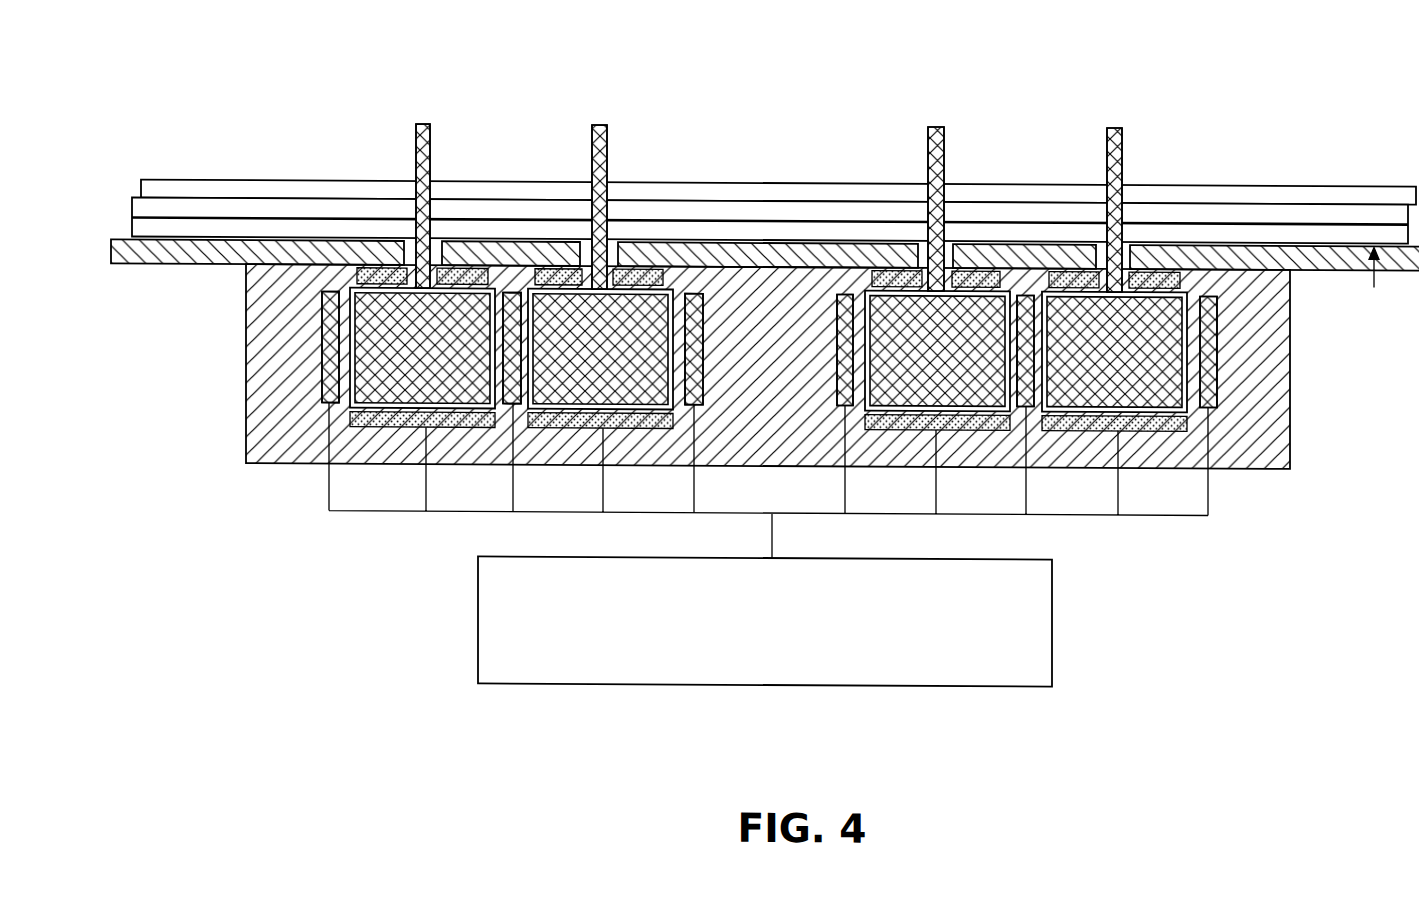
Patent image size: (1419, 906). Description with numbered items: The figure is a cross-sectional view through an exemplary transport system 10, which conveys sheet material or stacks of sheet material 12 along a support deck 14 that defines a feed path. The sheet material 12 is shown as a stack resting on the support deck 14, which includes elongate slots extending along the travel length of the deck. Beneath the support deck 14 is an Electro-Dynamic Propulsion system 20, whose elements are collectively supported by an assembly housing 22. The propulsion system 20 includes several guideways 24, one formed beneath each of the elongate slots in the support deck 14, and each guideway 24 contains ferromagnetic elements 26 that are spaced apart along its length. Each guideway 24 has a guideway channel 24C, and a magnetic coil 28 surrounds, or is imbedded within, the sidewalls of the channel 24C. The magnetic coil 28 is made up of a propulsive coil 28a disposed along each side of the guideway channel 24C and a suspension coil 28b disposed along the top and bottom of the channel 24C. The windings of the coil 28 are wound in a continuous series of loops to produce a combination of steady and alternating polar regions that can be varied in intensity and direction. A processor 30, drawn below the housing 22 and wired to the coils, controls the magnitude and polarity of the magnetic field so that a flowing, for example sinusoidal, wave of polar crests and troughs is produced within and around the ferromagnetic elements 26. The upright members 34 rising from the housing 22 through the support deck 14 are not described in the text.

The transport system 10 is at (765, 174).
The sheet material 12 is at (327, 213).
The support deck 14 is at (850, 242).
The Electro-Dynamic Propulsion (EDP) system 20 is at (690, 267).
The assembly housing 22 is at (768, 360).
The guideway 24 is at (690, 290).
The guideway channel 24C is at (705, 345).
The ferromagnetic element 26 is at (600, 330).
The magnetic coil 28 is at (639, 271).
The propulsive coil 28a is at (703, 347).
The suspension coil 28b is at (602, 417).
The processor 30 is at (520, 600).
The connector pins 34 is at (431, 185).